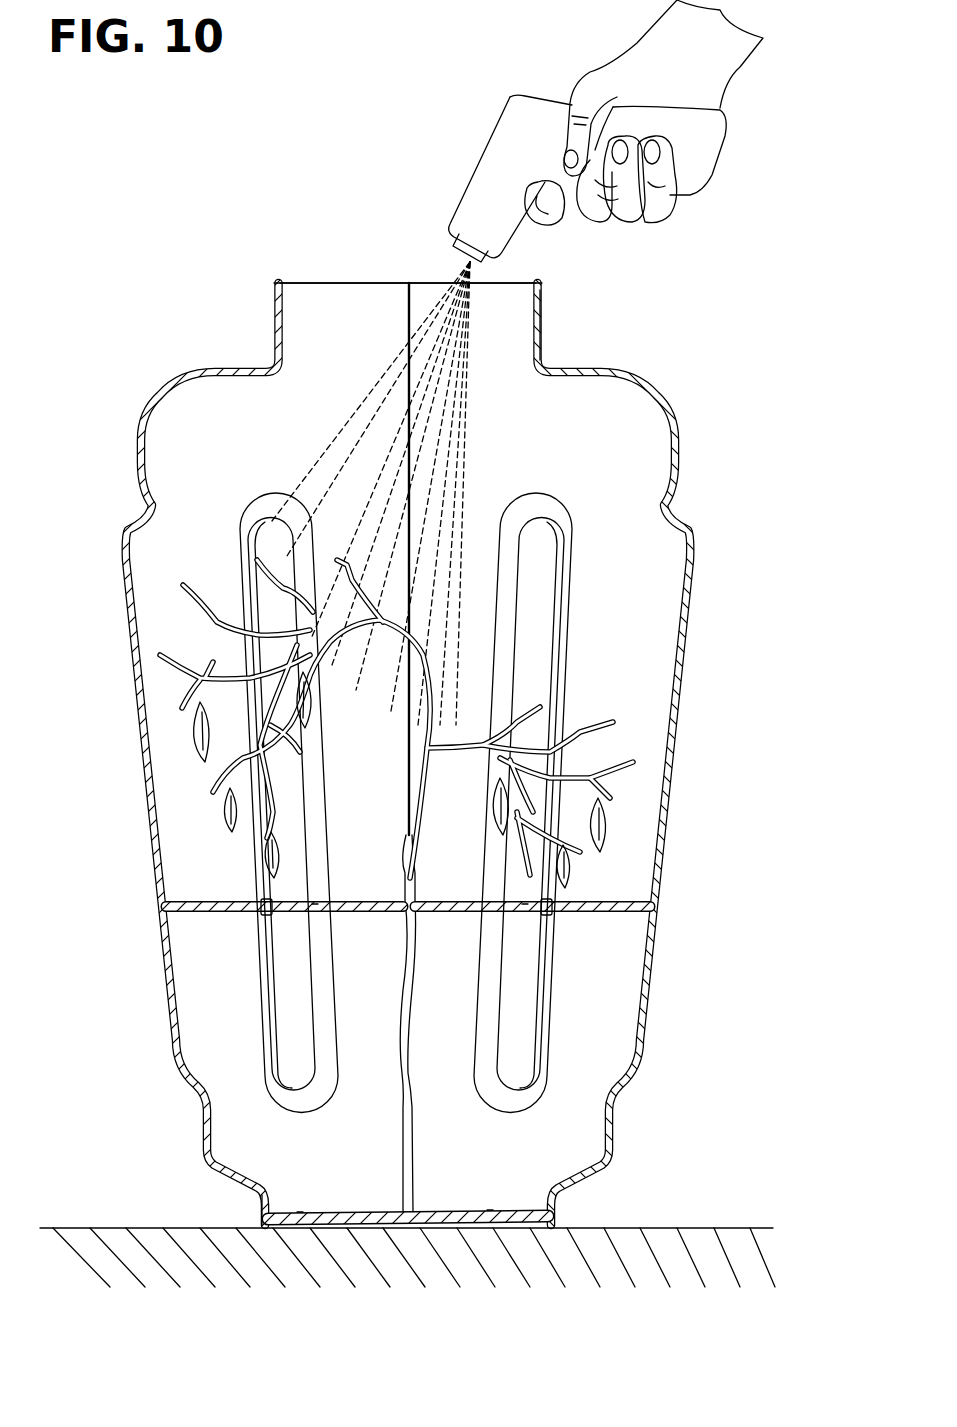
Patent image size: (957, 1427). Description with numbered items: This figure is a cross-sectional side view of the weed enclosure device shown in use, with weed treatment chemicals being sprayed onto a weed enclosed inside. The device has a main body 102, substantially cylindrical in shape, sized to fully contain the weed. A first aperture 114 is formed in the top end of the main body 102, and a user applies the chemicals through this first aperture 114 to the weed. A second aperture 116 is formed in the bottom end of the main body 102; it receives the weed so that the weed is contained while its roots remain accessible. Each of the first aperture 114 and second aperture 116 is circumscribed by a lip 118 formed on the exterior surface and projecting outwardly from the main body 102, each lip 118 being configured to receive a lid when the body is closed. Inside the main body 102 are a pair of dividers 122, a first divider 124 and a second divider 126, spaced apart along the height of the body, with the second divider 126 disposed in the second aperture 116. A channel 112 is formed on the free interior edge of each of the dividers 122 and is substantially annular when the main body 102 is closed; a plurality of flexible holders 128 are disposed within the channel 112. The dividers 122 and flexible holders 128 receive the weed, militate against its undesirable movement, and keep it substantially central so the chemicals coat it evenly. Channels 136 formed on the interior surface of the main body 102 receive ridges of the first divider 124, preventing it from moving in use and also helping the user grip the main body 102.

The main body 102 is at (650, 378).
The channel 112 is at (551, 917).
The first aperture 114 is at (285, 283).
The second aperture 116 is at (545, 1229).
The lip 118 is at (547, 327).
The divider 122 is at (476, 1031).
The first divider 124 is at (476, 875).
The second divider 126 is at (498, 1168).
The flexible holder 128 is at (316, 913).
The channel 136 is at (268, 1080).